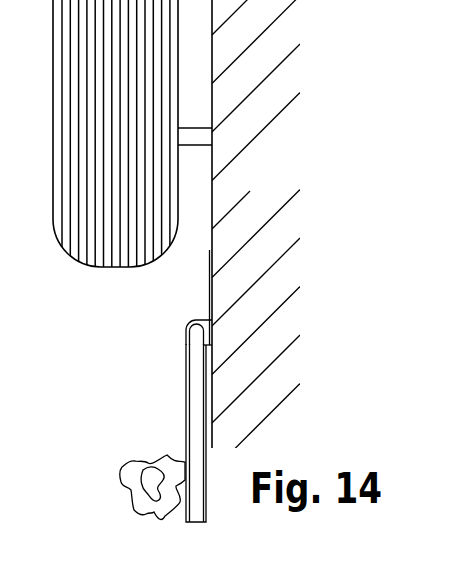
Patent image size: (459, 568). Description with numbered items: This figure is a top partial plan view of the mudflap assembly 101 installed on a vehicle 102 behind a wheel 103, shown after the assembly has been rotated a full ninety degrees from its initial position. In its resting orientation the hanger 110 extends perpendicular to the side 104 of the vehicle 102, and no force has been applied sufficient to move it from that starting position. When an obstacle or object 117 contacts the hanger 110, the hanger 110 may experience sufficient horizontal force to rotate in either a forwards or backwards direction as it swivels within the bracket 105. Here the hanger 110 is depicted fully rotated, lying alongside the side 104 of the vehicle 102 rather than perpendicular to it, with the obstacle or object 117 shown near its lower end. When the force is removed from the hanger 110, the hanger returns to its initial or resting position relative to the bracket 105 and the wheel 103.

The mudflap assembly 101 is at (156, 376).
The vehicle 102 is at (297, 187).
The wheel 103 is at (136, 138).
The side of the vehicle 104 is at (212, 289).
The bracket 105 is at (186, 326).
The hanger 110 is at (186, 433).
The obstacle or object 117 is at (127, 466).